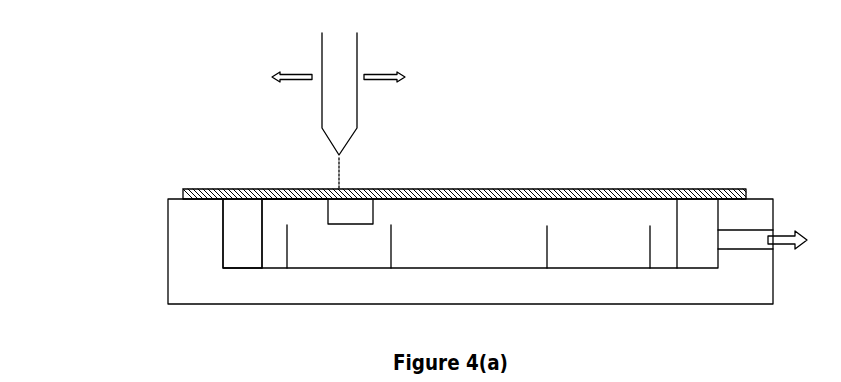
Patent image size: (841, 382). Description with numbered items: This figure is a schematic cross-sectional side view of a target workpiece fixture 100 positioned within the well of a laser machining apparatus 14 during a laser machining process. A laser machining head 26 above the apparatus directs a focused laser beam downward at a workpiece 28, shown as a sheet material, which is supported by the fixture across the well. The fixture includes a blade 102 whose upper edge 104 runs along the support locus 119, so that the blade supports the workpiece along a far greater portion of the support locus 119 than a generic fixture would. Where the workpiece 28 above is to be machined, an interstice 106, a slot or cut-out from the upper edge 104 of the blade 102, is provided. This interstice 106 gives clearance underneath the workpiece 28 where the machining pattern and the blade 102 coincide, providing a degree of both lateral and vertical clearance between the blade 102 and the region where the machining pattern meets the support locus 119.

The laser machining apparatus 14 is at (197, 287).
The laser machining head 26 is at (348, 57).
The workpiece 28 is at (710, 195).
The target workpiece fixture 100 is at (239, 240).
The blade 102 is at (606, 245).
The upper edge 104 is at (318, 203).
The interstice 106 is at (352, 212).
The support locus 119 is at (512, 198).